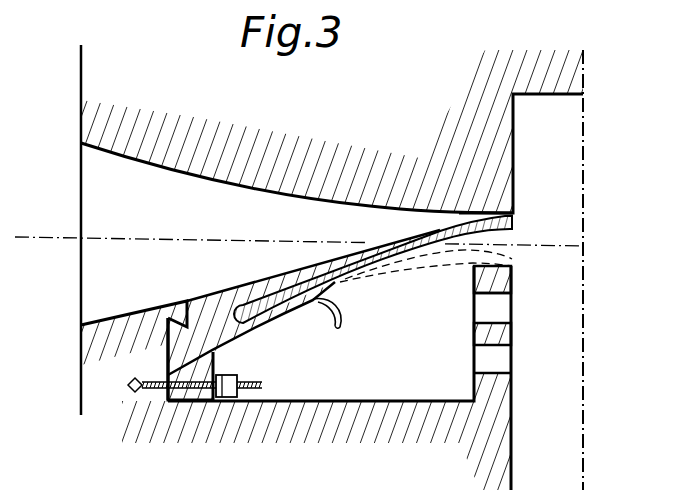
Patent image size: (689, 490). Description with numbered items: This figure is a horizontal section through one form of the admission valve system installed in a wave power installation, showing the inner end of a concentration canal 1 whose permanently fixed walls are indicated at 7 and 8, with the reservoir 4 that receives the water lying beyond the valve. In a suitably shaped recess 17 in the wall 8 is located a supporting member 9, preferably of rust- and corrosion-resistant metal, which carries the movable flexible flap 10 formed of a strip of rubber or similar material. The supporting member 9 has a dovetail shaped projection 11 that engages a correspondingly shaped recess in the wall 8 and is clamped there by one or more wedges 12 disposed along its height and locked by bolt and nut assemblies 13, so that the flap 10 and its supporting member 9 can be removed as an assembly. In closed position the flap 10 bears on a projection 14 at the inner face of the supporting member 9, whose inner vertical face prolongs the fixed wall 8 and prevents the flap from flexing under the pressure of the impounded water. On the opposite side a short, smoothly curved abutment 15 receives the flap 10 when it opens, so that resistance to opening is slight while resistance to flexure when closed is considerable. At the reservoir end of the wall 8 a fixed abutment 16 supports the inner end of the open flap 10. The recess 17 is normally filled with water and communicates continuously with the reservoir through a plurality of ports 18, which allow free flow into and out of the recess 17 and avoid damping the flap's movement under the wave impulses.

The concentration canal 1 is at (108, 188).
The reservoir 4 is at (554, 172).
The fixed wall of the canal 7 is at (267, 190).
The fixed wall of the canal 8 is at (115, 313).
The supporting member 9 is at (210, 312).
The movable flexible flap 10 is at (430, 238).
The dovetail shaped projection 11 is at (177, 338).
The wedge 12 is at (200, 372).
The bolt and nut assembly 13 is at (262, 390).
The projection 14 is at (305, 275).
The curved abutment 15 is at (316, 305).
The fixed abutment 16 is at (497, 283).
The recess 17 is at (398, 375).
The ports 18 is at (497, 358).